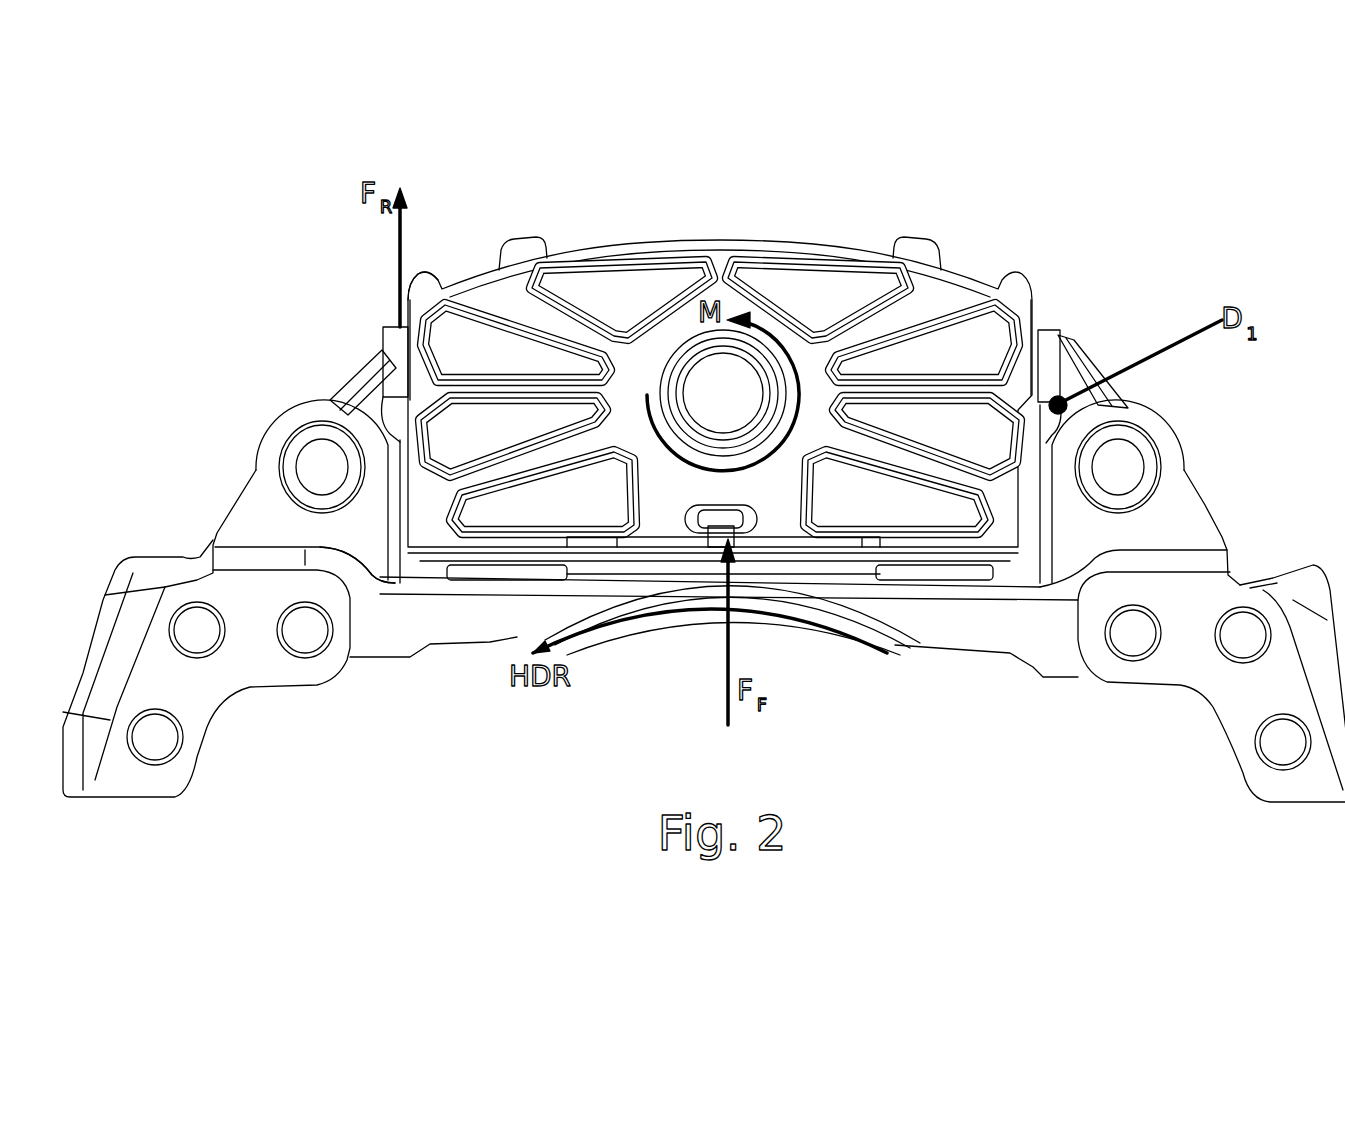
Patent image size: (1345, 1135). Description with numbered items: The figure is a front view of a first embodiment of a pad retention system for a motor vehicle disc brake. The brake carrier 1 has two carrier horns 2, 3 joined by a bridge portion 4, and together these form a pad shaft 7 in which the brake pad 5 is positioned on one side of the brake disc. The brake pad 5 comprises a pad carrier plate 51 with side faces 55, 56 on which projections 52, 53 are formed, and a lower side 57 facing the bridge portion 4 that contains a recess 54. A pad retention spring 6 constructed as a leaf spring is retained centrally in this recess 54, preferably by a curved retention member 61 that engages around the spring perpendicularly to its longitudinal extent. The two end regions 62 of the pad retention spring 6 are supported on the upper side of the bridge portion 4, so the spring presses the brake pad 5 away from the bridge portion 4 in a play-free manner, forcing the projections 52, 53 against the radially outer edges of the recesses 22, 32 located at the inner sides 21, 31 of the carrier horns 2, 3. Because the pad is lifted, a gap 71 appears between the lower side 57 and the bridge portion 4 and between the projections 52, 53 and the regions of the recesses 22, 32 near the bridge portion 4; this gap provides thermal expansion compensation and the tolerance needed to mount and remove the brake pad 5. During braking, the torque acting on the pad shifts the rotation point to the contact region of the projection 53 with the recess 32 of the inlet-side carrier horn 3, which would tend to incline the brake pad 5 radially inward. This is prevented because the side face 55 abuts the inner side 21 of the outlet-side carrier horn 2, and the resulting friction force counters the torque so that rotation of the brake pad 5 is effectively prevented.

The brake carrier 1 is at (238, 662).
The outlet-side carrier horn 2 is at (398, 368).
The inlet-side carrier horn 3 is at (1048, 378).
The bridge portion 4 is at (933, 617).
The brake pad 5 is at (752, 226).
The pad retention spring 6 is at (808, 560).
The pad shaft 7 is at (1027, 550).
The inner side of outlet-side carrier horn 21 is at (410, 352).
The recess of outlet-side carrier horn 22 is at (398, 412).
The inner side of inlet-side carrier horn 31 is at (1035, 360).
The recess of inlet-side carrier horn 32 is at (1067, 425).
The pad carrier plate 51 is at (648, 338).
The projection 52 is at (385, 405).
The projection 53 is at (1045, 417).
The recess 54 is at (712, 546).
The side face 55 is at (400, 293).
The side face 56 is at (1048, 315).
The lower side of brake pad 57 is at (470, 550).
The curved retention member 61 is at (702, 525).
The end regions of pad retention spring 62 is at (497, 580).
The gap 71 is at (393, 440).